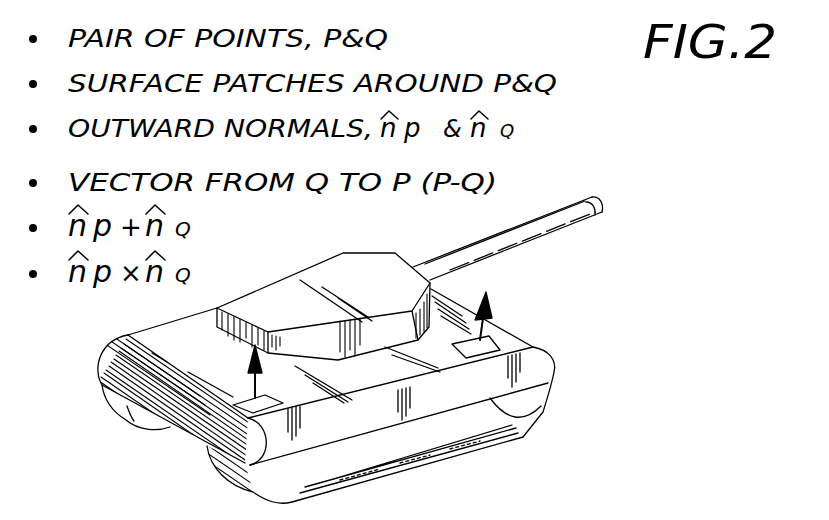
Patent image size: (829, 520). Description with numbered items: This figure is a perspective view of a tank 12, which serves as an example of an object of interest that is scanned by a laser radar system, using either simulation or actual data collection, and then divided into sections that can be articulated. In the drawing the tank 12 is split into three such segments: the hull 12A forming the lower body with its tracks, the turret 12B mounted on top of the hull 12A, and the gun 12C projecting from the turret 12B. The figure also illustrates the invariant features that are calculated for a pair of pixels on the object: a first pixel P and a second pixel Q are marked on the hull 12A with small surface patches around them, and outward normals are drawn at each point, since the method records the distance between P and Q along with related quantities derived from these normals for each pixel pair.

The tank 12 is at (394, 343).
The hull 12A is at (537, 415).
The turret 12B is at (227, 323).
The gun 12C is at (602, 206).